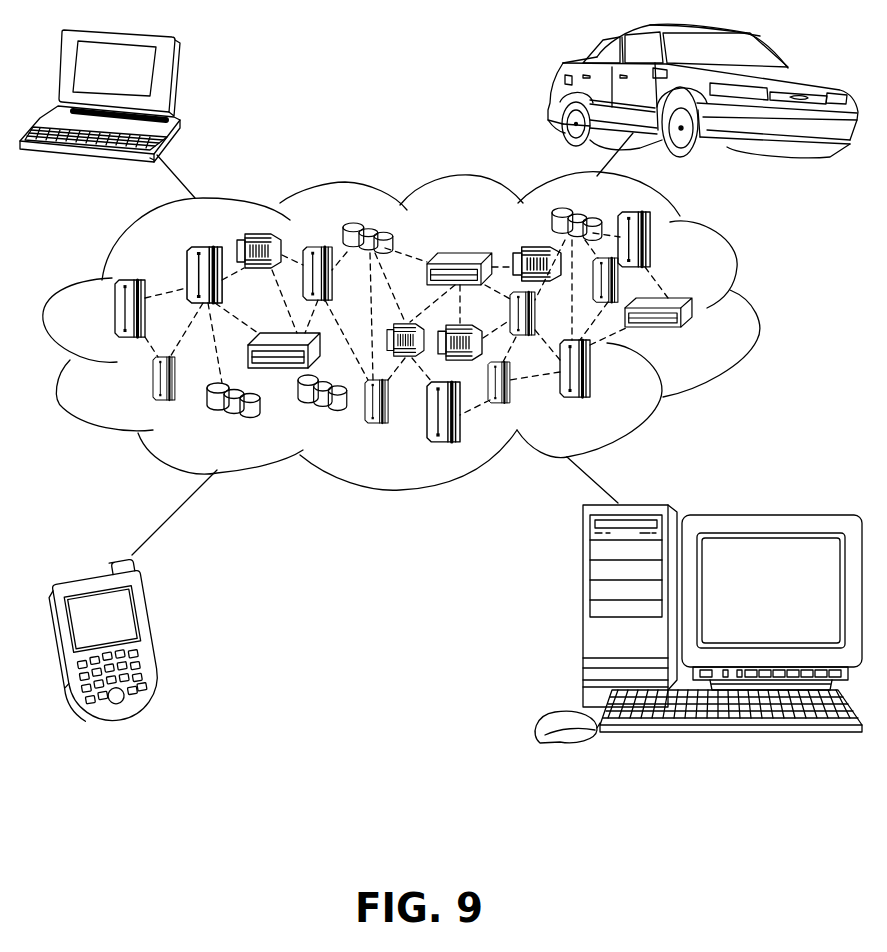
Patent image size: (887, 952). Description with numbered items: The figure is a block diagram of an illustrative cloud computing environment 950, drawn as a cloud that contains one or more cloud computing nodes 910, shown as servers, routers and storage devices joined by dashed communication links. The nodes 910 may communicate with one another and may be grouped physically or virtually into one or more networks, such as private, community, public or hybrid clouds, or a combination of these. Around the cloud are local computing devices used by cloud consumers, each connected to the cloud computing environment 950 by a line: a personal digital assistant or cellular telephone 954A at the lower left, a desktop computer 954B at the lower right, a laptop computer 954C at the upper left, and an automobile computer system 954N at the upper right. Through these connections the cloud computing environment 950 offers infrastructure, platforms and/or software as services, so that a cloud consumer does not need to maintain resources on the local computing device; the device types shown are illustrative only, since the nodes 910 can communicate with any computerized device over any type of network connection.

The cloud computing environment 950 is at (737, 272).
The cloud computing nodes 910 is at (713, 330).
The laptop computer 954C is at (178, 77).
The automobile computer system 954N is at (552, 83).
The personal digital assistant (PDA) or cellular telephone 954A is at (165, 631).
The desktop computer 954B is at (583, 610).